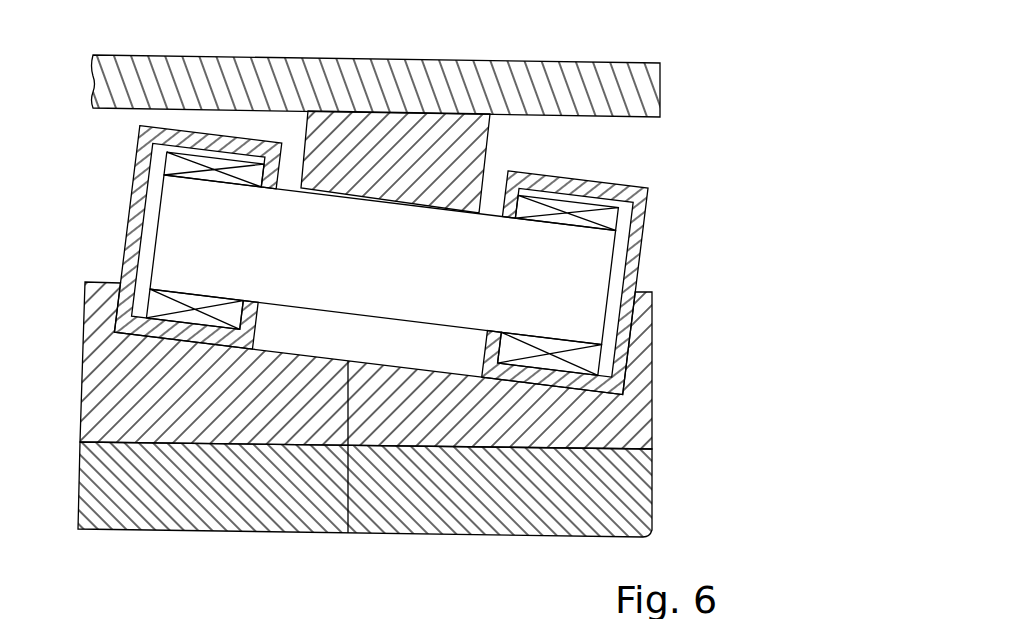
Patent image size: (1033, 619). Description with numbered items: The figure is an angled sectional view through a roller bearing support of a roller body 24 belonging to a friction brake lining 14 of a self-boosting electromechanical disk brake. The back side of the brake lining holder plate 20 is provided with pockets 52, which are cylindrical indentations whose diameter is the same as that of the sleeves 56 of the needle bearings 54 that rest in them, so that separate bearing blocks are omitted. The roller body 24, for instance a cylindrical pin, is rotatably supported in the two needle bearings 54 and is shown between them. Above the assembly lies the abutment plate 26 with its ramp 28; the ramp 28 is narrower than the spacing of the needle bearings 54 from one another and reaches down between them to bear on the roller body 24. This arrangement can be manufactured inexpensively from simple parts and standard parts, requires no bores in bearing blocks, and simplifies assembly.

The friction brake lining 14 is at (523, 508).
The brake lining holder plate 20 is at (143, 388).
The roller body 24 is at (402, 268).
The abutment plate 26 is at (638, 93).
The ramp 28 is at (440, 133).
The pocket 52 is at (348, 533).
The needle bearing 54 is at (601, 216).
The sleeve 56 is at (630, 274).